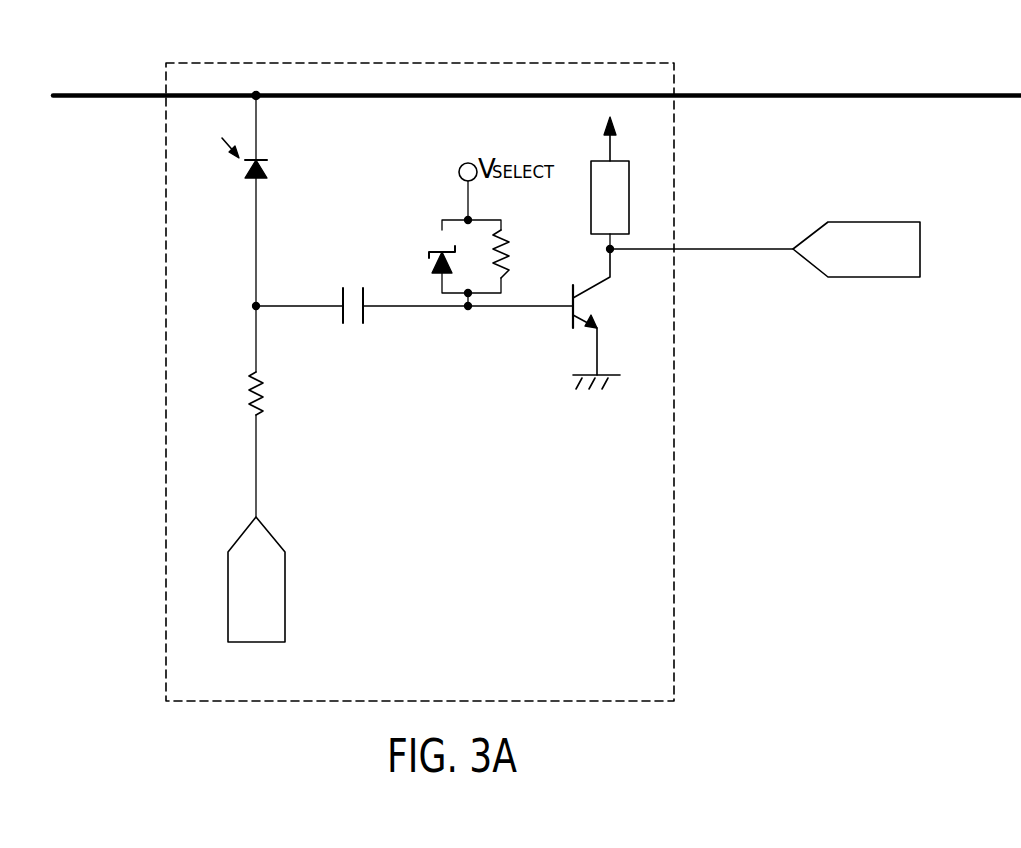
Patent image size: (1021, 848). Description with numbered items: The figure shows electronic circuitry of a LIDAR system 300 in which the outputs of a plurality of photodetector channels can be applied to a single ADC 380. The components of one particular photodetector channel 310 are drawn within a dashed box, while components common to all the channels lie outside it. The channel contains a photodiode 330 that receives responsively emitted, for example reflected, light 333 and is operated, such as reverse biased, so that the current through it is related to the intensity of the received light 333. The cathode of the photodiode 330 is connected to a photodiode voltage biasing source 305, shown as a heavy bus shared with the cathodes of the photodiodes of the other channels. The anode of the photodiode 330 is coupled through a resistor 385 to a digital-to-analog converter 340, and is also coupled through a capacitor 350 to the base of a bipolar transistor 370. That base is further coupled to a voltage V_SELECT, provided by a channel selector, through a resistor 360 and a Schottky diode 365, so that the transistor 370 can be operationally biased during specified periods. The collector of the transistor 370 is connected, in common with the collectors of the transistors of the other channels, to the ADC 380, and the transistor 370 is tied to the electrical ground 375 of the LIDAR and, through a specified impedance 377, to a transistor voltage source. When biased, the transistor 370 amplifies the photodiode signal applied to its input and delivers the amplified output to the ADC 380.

The LIDAR system 300 is at (914, 539).
The photodiode voltage biasing source 305 is at (948, 93).
The photodetector channel 310 is at (674, 585).
The photodiode 330 is at (266, 170).
The received light 333 is at (244, 142).
The digital-to-analog converter 340 is at (285, 578).
The capacitor 350 is at (365, 315).
The resistor 360 is at (509, 244).
The Schottky diode 365 is at (430, 260).
The transistor 370 is at (572, 320).
The electrical ground 375 is at (615, 379).
The specified impedance 377 is at (605, 160).
The ADC 380 is at (862, 221).
The resistor 385 is at (262, 398).